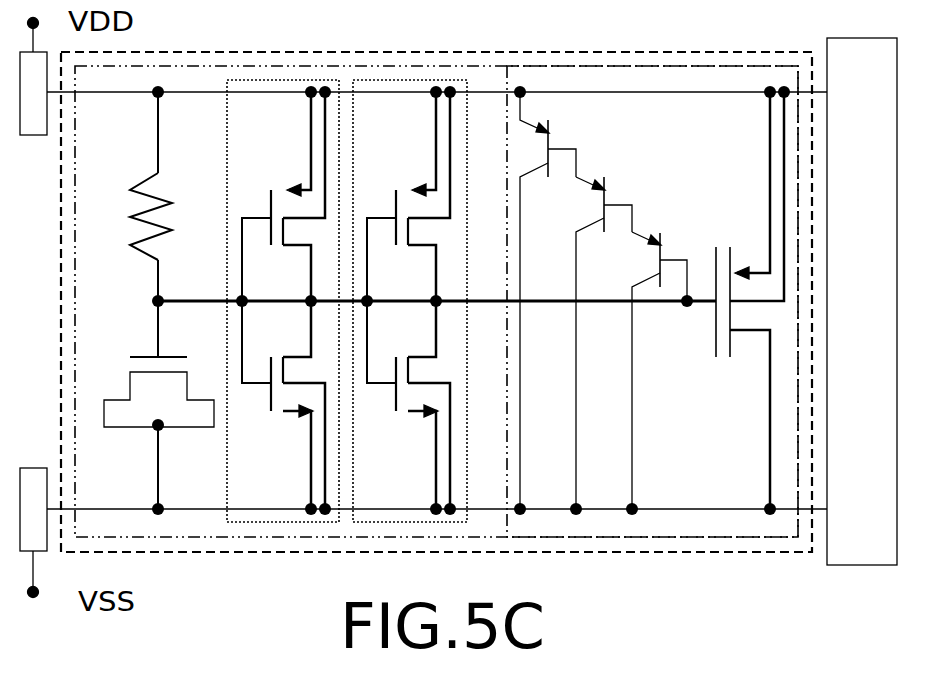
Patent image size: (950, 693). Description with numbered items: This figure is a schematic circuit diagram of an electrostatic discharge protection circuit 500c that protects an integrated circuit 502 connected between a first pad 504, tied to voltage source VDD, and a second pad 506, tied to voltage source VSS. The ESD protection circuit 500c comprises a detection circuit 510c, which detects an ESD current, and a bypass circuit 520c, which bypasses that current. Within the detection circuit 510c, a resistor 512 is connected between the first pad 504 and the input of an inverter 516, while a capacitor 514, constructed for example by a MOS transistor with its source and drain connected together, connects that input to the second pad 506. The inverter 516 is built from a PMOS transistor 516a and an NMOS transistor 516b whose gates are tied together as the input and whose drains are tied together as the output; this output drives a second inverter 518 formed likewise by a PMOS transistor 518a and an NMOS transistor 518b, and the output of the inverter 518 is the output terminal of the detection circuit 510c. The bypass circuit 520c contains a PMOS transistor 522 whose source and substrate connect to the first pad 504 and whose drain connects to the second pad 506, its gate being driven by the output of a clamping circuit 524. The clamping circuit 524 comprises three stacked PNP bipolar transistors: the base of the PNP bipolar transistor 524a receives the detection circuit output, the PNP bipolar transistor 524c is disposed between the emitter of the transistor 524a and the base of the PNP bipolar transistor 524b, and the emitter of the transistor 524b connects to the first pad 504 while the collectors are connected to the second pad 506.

The ESD protection circuit 500c is at (620, 553).
The integrated circuit 502 is at (865, 565).
The first pad 504 is at (33, 136).
The second pad 506 is at (33, 468).
The detection circuit 510c is at (145, 66).
The resistor 512 is at (158, 163).
The capacitor 514 is at (150, 357).
The inverter 516 is at (293, 268).
The PMOS transistor 516a is at (270, 203).
The NMOS transistor 516b is at (270, 402).
The inverter 518 is at (433, 267).
The PMOS transistor 518a is at (405, 196).
The NMOS transistor 518b is at (405, 405).
The bypass circuit 520c is at (565, 66).
The PMOS transistor 522 is at (715, 330).
The clamping circuit 524 is at (655, 260).
The PNP bipolar transistor 524a is at (669, 350).
The PNP bipolar transistor 524b is at (550, 125).
The PNP bipolar transistor 524c is at (604, 188).